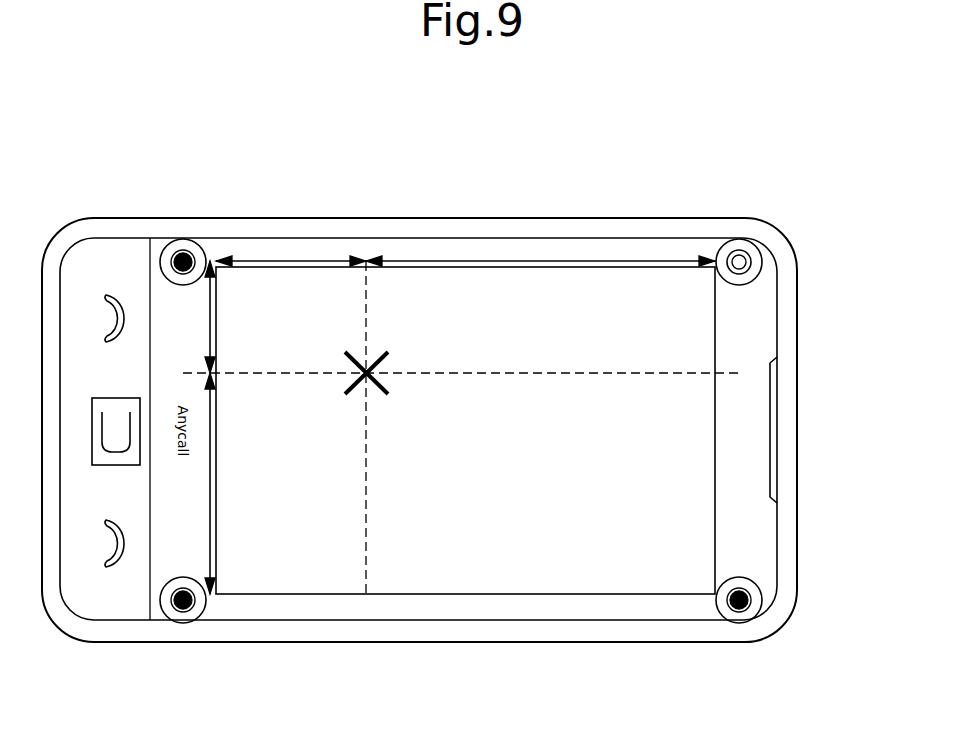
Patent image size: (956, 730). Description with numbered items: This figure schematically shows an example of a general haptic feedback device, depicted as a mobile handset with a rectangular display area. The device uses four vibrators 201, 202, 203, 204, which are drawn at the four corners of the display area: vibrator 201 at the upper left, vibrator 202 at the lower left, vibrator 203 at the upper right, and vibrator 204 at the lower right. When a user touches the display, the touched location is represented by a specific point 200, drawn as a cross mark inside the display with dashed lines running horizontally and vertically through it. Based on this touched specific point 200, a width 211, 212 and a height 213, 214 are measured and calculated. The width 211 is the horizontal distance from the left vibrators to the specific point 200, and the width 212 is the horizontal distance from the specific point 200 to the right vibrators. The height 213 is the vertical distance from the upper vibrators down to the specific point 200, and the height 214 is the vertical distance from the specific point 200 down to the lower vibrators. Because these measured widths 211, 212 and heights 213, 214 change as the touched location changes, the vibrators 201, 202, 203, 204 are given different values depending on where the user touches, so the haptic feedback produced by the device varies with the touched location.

The specific point 200 is at (374, 368).
The vibrator 201 is at (186, 240).
The vibrator 202 is at (184, 623).
The vibrator 203 is at (756, 248).
The vibrator 204 is at (745, 622).
The width 211 is at (291, 272).
The width 212 is at (540, 272).
The height 213 is at (252, 317).
The height 214 is at (252, 483).